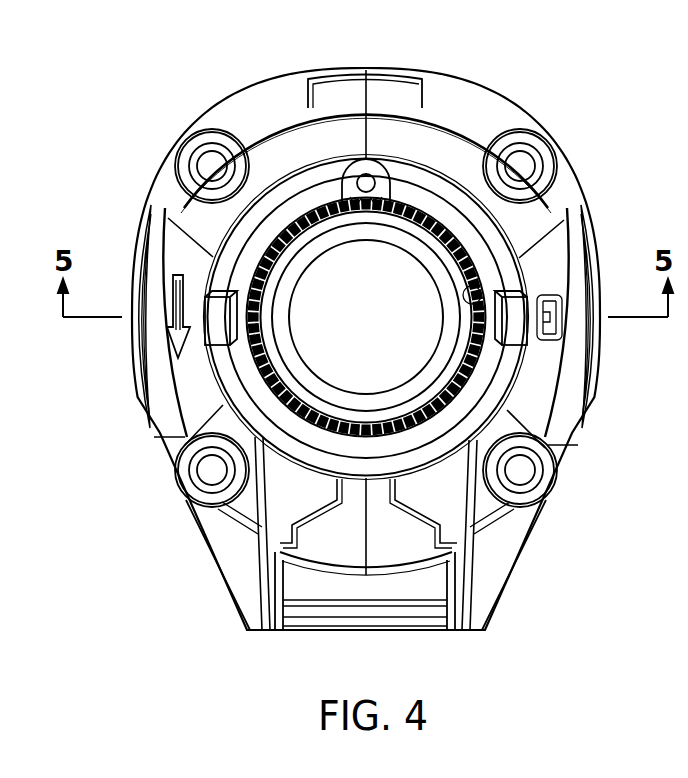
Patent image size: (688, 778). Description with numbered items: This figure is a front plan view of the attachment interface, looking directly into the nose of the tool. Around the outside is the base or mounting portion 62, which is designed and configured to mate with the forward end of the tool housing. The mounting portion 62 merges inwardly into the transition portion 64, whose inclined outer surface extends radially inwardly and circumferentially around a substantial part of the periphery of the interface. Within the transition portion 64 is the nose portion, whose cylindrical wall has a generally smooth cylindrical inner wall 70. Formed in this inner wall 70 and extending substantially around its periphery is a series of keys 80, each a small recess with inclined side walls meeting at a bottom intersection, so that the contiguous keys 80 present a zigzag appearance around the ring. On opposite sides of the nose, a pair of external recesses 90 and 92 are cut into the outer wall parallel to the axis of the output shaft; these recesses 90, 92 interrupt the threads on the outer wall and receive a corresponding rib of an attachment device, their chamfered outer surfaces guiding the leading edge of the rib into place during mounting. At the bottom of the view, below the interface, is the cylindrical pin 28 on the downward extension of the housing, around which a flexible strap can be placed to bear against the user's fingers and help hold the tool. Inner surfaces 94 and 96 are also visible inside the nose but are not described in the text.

The cylindrical pin 28 is at (387, 621).
The base or mounting portion 62 is at (241, 107).
The transition portion 64 is at (292, 140).
The cylindrical inner wall 70 is at (478, 283).
The keys 80 is at (431, 212).
The external recess 90 is at (512, 318).
The external recess 92 is at (217, 318).
The nose ring 94 is at (313, 228).
The central opening 96 is at (404, 242).